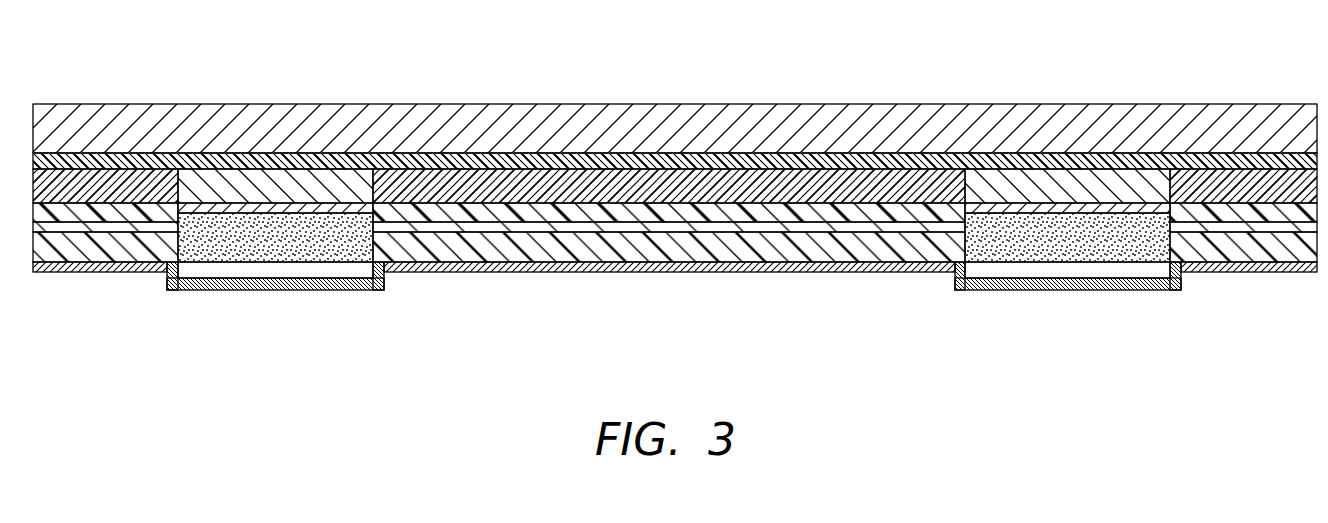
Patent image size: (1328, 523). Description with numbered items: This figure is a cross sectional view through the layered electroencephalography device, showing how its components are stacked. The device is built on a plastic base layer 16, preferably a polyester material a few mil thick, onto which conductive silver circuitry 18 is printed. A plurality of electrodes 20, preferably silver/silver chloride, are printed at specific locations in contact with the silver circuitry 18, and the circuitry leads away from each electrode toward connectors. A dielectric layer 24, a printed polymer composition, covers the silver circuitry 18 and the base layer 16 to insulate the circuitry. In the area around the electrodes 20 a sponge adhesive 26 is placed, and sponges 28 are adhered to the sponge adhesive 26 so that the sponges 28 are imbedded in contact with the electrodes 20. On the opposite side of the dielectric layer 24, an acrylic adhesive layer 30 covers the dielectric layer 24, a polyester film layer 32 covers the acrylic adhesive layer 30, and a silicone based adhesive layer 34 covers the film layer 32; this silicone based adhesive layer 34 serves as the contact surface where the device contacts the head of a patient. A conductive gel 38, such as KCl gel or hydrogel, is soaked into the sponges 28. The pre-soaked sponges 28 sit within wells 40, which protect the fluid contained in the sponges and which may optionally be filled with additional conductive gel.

The base layer 16 is at (758, 115).
The conductive silver circuitry 18 is at (892, 158).
The electrodes 20 is at (1018, 178).
The dielectric layer 24 is at (468, 182).
The sponge adhesive 26 is at (315, 215).
The sponges 28 is at (322, 240).
The acrylic adhesive layer 30 is at (492, 212).
The film layer 32 is at (715, 227).
The silicone based adhesive layer 34 is at (813, 248).
The conductive gel 38 is at (200, 246).
The wells 40 is at (1100, 285).